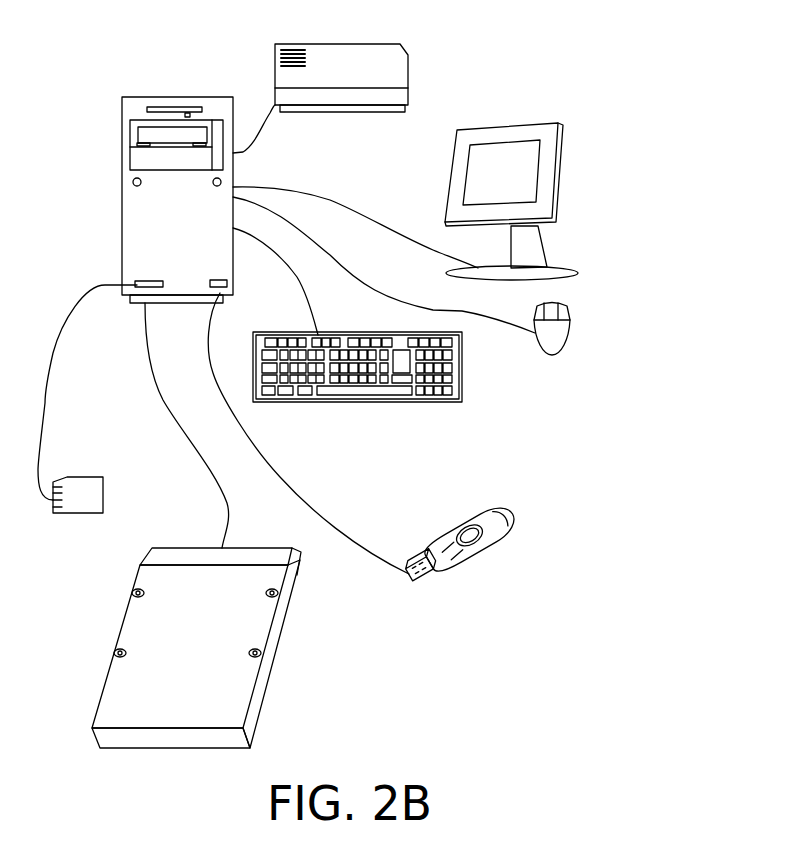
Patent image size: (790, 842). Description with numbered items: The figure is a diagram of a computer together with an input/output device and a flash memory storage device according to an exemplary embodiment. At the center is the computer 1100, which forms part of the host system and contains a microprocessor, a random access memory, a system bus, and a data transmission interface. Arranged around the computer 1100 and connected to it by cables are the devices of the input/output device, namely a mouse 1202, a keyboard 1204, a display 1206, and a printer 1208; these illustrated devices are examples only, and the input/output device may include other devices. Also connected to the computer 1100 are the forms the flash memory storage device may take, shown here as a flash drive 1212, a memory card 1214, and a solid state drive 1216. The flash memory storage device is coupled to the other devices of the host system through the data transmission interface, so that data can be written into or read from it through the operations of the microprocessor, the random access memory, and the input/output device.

The computer 1100 is at (178, 97).
The mouse 1202 is at (569, 330).
The keyboard 1204 is at (480, 380).
The display 1206 is at (515, 123).
The printer 1208 is at (336, 44).
The flash drive 1212 is at (455, 530).
The memory card 1214 is at (105, 483).
The solid state drive 1216 is at (254, 532).